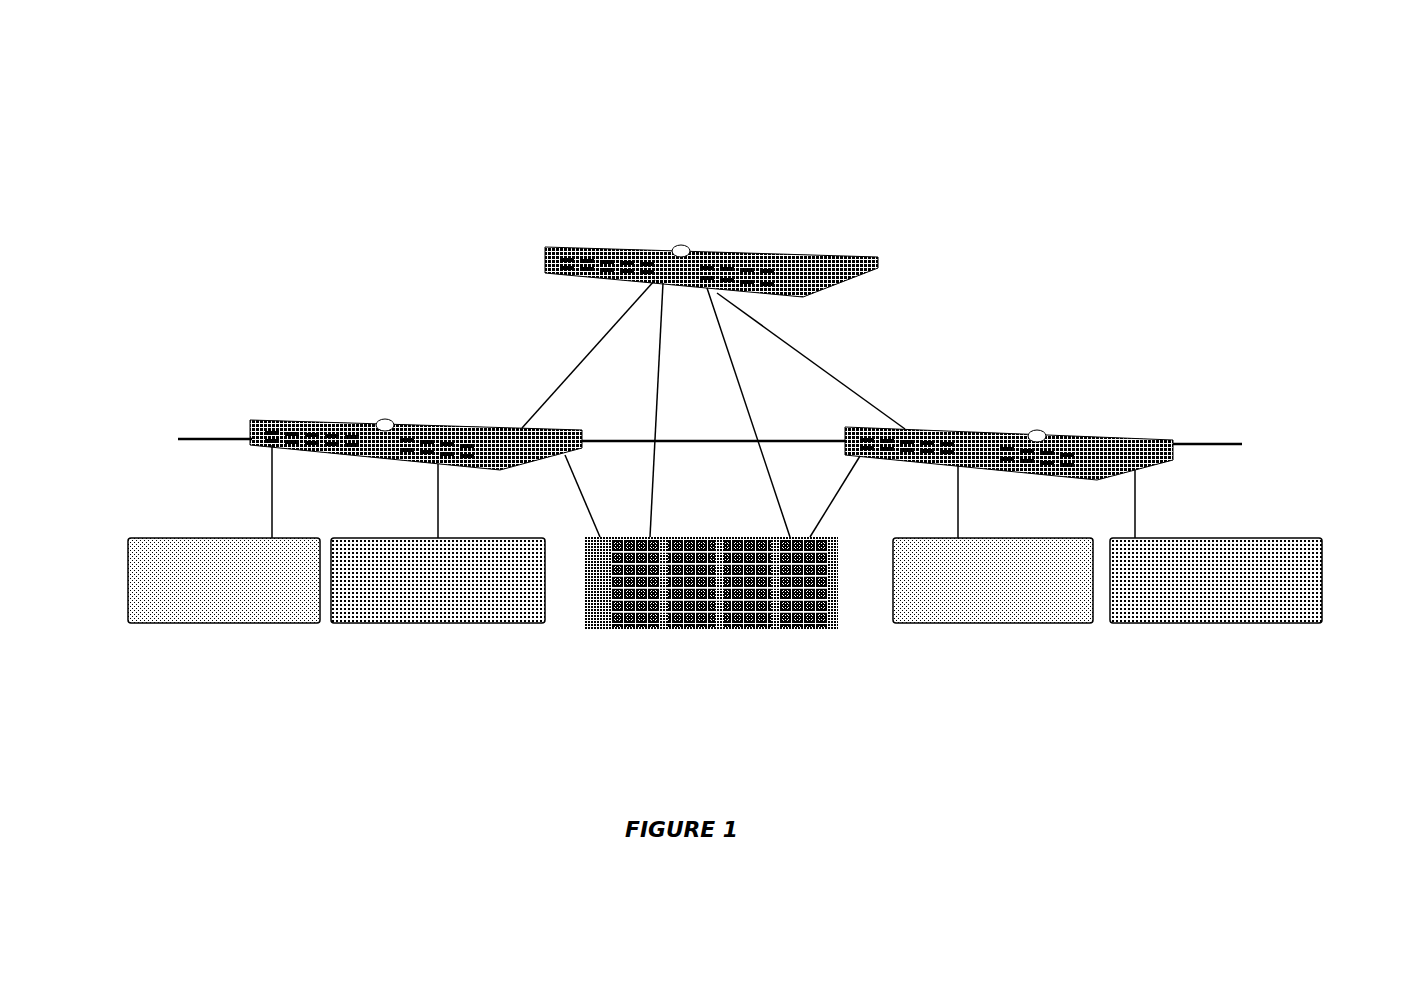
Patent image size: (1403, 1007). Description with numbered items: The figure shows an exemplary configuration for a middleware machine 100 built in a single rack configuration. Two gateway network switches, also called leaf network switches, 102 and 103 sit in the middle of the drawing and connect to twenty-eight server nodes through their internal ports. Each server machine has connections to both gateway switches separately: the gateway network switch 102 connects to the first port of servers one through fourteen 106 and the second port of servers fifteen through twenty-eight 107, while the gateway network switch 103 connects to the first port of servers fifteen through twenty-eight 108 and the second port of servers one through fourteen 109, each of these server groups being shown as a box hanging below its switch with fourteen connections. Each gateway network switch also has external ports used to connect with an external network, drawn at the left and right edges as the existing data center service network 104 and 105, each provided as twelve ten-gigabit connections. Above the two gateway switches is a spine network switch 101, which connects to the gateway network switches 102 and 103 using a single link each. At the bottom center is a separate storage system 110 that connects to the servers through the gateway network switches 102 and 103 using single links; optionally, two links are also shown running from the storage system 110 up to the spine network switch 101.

The middleware machine 100 is at (162, 80).
The spine network switch 101 is at (770, 242).
The gateway network switch 102 is at (477, 422).
The gateway network switch 103 is at (920, 425).
The existing data center service network 104 is at (165, 423).
The existing data center service network 105 is at (1270, 425).
The port 1 of the servers 1-14 106 is at (198, 623).
The port 2 of the servers 15-28 107 is at (455, 623).
The port 1 of the servers 15-28 108 is at (990, 618).
The port 2 of the servers 1-14 109 is at (1233, 622).
The storage system 110 is at (727, 627).